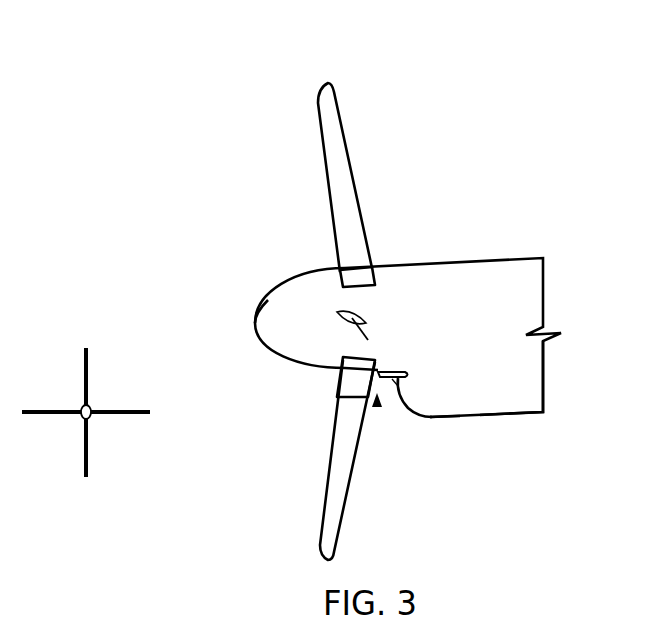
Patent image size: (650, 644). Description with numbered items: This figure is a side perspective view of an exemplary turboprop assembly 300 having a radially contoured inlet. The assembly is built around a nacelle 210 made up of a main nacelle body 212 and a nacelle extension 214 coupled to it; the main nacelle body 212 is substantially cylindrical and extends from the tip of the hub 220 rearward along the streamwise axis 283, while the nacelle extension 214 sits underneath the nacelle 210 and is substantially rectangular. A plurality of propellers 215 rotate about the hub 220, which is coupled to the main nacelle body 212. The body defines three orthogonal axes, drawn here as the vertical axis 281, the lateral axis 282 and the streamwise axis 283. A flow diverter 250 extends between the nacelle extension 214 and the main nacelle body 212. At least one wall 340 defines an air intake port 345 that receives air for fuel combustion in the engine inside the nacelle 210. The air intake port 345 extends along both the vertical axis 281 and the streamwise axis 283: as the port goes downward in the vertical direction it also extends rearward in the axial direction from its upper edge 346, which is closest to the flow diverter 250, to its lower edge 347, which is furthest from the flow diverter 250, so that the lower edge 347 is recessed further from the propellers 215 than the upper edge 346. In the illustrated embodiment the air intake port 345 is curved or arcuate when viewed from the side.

The turboprop assembly 300 is at (288, 70).
The nacelle 210 is at (299, 265).
The main nacelle body 212 is at (440, 242).
The nacelle extension 214 is at (485, 430).
The propellers 215 is at (321, 493).
The hub 220 is at (265, 304).
The flow diverter 250 is at (396, 374).
The vertical axis 281 is at (88, 372).
The lateral axis 282 is at (82, 418).
The streamwise axis 283 is at (143, 405).
The wall 340 is at (413, 414).
The air intake port 345 is at (378, 405).
The upper edge 346 is at (396, 384).
The lower edge 347 is at (440, 420).